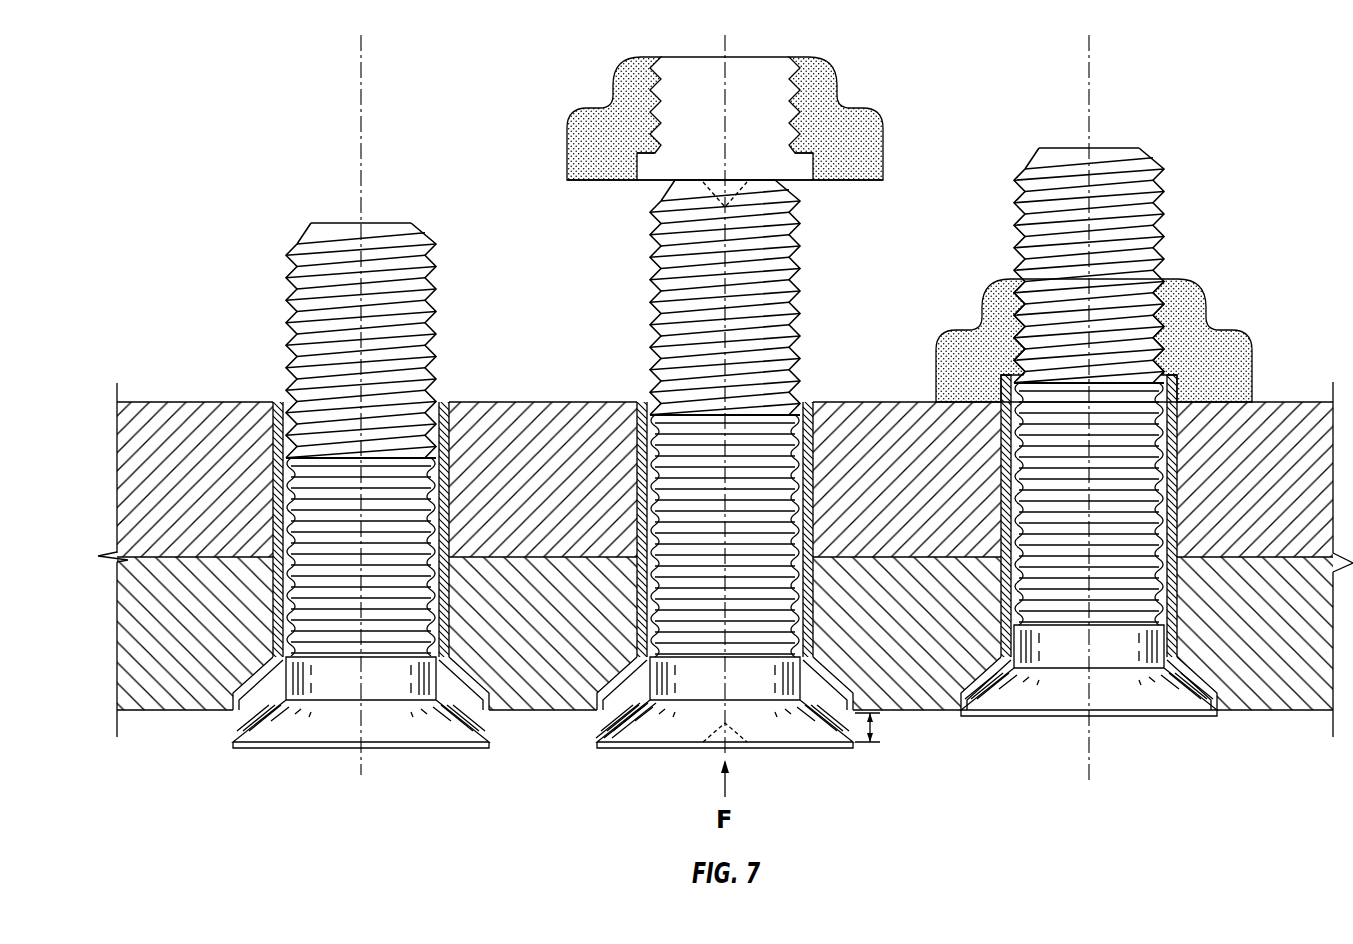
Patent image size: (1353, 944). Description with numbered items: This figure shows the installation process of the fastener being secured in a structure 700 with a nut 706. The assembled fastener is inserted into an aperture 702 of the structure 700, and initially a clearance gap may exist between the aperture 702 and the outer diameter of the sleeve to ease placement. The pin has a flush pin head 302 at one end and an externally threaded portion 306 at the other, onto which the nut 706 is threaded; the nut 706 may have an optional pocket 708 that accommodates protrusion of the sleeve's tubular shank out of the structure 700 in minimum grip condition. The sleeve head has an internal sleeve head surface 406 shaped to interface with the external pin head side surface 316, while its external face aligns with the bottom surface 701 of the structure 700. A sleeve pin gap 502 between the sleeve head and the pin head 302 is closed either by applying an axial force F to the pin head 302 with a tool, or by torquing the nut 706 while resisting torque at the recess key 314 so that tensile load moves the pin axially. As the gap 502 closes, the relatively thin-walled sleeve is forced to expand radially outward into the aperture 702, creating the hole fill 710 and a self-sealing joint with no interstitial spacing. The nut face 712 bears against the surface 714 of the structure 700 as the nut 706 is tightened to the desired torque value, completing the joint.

The structure 700 is at (168, 477).
The bottom surface of structure 701 is at (175, 712).
The aperture 702 is at (272, 568).
The pin head 302 is at (453, 728).
The externally threaded portion 306 is at (765, 292).
The recess key 314 is at (775, 210).
The external pin head side surface 316 is at (620, 722).
The internal sleeve head surface 406 is at (617, 700).
The sleeve pin gap 502 is at (876, 731).
The nut 706 is at (815, 80).
The pocket 708 is at (647, 167).
The hole fill 710 is at (1182, 478).
The nut face 712 is at (843, 182).
The surface of structure 714 is at (862, 402).